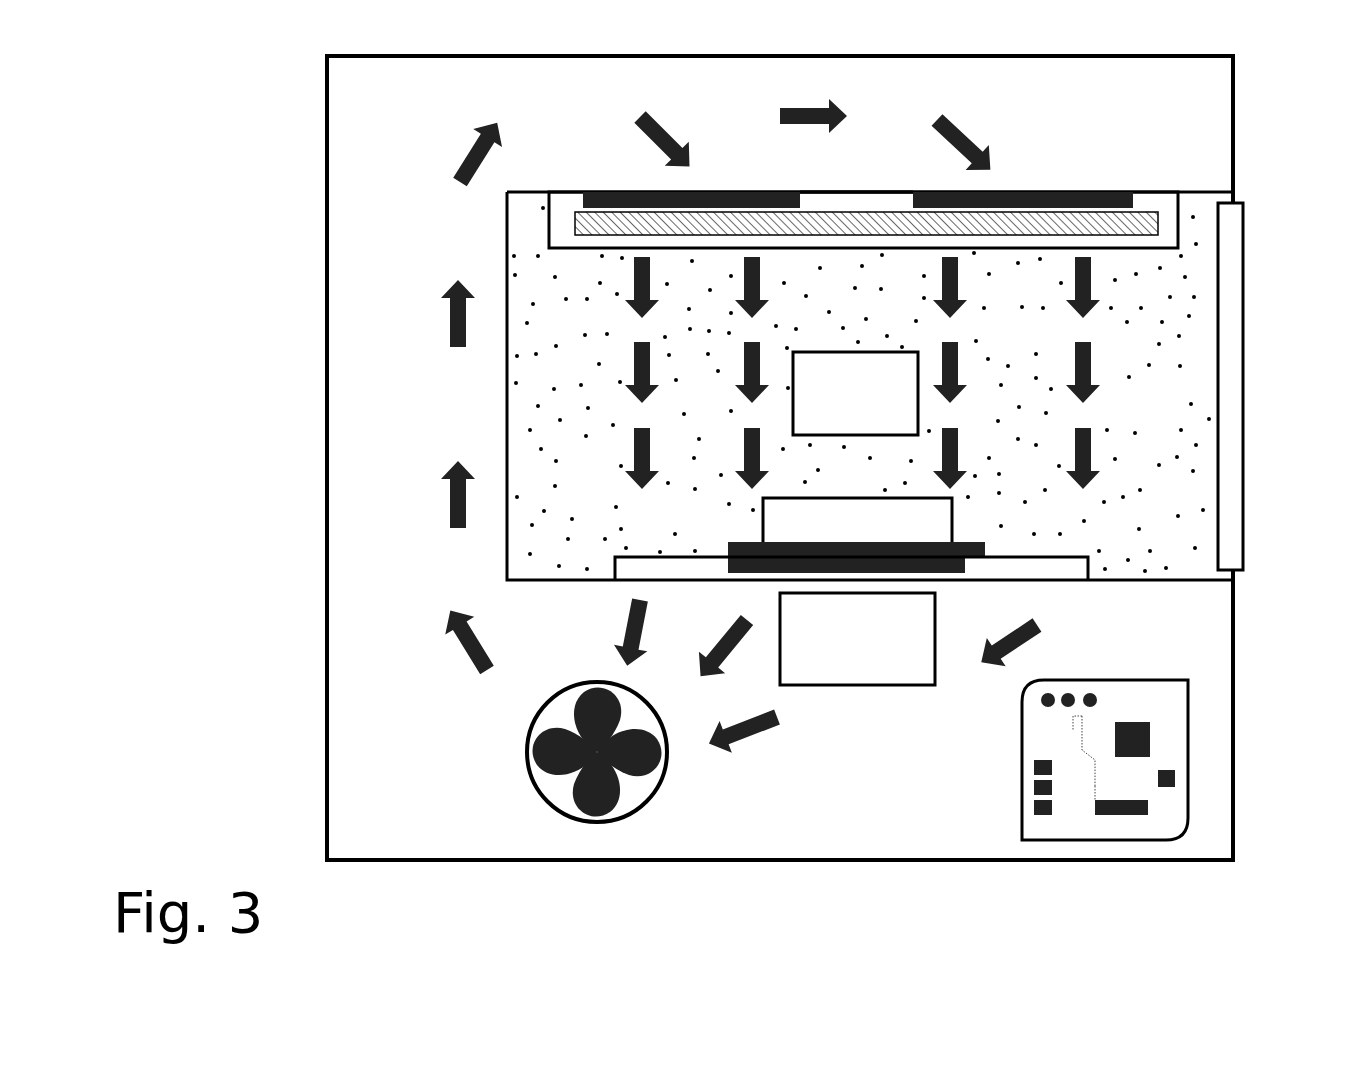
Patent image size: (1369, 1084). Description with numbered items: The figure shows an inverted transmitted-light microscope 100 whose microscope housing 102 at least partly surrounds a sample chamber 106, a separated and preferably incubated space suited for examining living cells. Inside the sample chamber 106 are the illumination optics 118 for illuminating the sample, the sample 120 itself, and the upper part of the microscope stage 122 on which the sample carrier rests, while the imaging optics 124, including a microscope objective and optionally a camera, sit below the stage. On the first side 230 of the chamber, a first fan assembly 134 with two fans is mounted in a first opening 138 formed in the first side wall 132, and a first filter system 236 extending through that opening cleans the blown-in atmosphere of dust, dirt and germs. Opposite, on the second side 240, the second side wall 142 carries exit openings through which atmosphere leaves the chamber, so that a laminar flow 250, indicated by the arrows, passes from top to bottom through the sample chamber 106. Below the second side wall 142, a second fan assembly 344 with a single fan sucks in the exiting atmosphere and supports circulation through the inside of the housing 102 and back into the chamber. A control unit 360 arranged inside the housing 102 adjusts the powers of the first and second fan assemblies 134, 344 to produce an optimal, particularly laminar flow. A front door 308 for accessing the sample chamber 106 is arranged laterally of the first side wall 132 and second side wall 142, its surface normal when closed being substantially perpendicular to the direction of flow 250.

The microscope 100 is at (183, 158).
The microscope housing 102 is at (1235, 790).
The sample chamber 106 is at (1175, 428).
The illumination optics 118 is at (885, 402).
The sample 120 is at (882, 540).
The microscope stage 122 is at (1050, 582).
The imaging optics 124 is at (885, 656).
The first side wall 132 is at (519, 190).
The first fan assembly 134 is at (596, 190).
The first opening 138 is at (932, 192).
The second side wall 142 is at (560, 580).
The first side 230 is at (752, 123).
The first filter system 236 is at (1155, 208).
The second side 240 is at (718, 624).
The laminar flow 250 is at (634, 376).
The front door 308 is at (1244, 278).
The second fan assembly 344 is at (525, 748).
The control unit 360 is at (1020, 780).